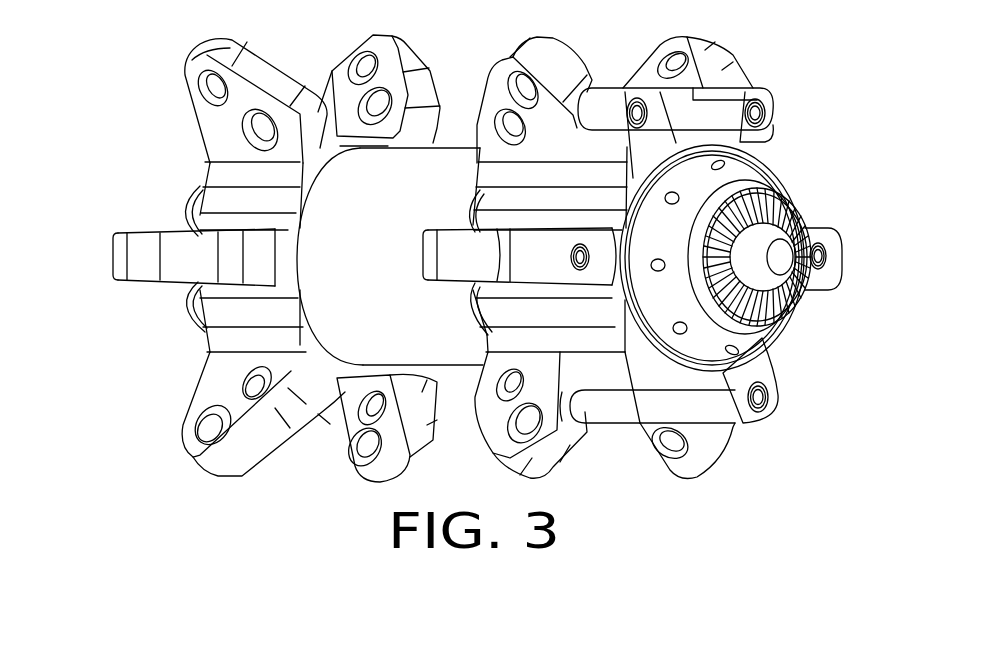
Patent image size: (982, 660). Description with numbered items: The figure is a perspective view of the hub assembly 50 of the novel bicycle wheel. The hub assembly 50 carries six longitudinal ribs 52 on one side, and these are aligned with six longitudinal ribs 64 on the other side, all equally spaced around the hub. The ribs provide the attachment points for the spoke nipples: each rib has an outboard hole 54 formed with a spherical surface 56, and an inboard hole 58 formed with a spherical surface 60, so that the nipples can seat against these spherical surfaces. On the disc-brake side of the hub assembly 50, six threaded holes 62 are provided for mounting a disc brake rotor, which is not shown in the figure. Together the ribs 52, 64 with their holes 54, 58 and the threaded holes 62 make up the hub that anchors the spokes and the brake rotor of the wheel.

The hub assembly 50 is at (742, 22).
The longitudinal ribs 52 is at (145, 258).
The outboard hole 54 is at (200, 95).
The spherical surface 56 is at (366, 457).
The inboard hole 58 is at (357, 405).
The spherical surface 60 is at (252, 132).
The threaded holes 62 is at (765, 410).
The longitudinal ribs 64 is at (455, 255).